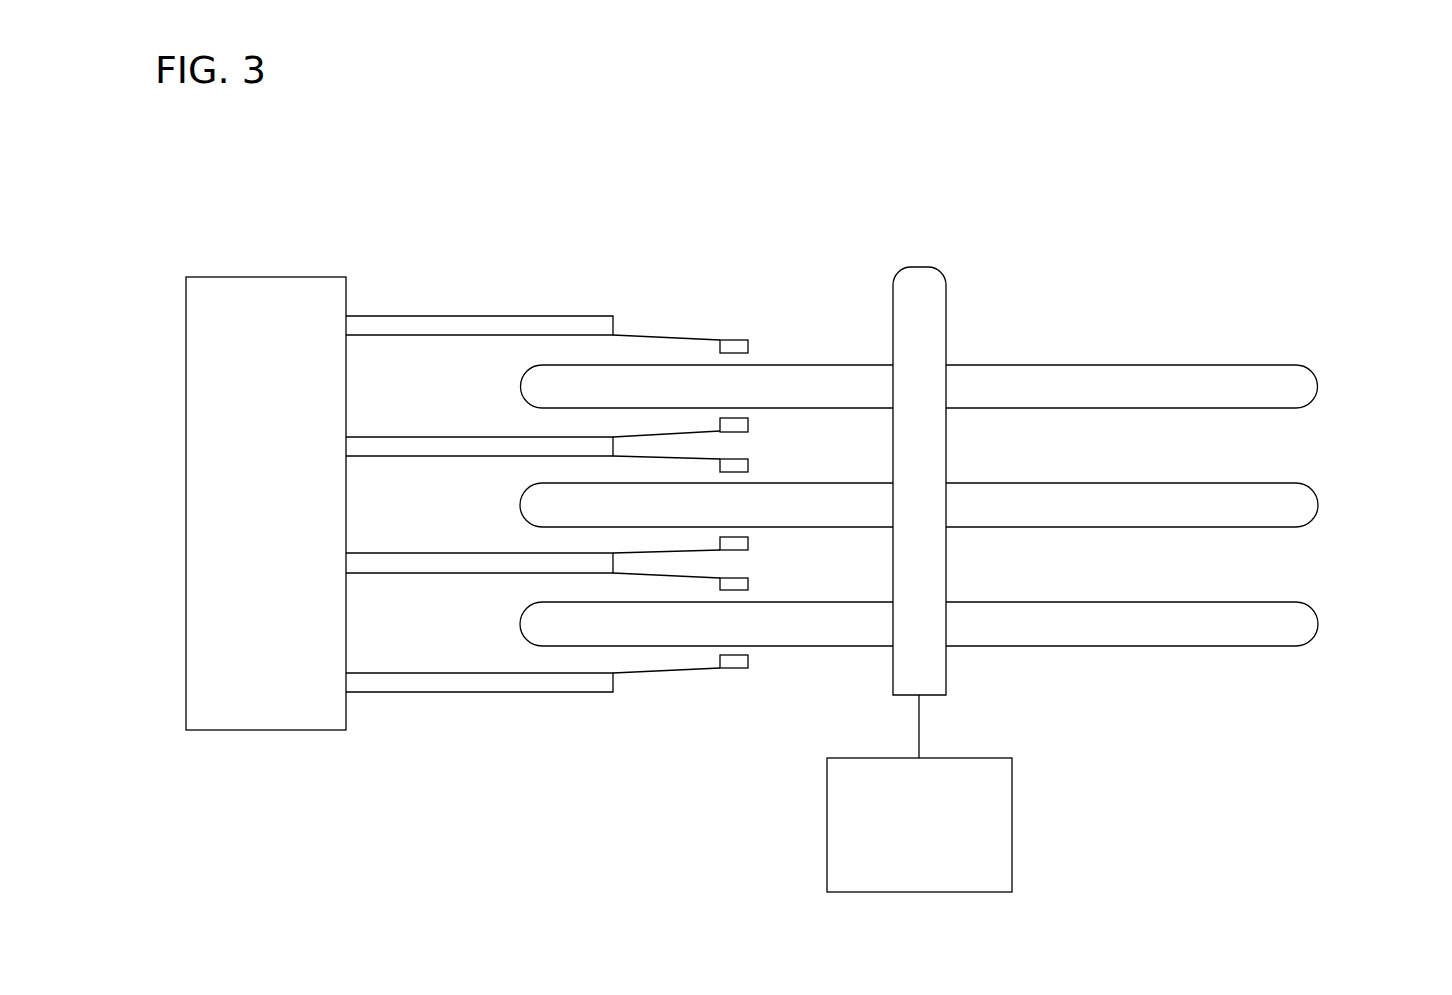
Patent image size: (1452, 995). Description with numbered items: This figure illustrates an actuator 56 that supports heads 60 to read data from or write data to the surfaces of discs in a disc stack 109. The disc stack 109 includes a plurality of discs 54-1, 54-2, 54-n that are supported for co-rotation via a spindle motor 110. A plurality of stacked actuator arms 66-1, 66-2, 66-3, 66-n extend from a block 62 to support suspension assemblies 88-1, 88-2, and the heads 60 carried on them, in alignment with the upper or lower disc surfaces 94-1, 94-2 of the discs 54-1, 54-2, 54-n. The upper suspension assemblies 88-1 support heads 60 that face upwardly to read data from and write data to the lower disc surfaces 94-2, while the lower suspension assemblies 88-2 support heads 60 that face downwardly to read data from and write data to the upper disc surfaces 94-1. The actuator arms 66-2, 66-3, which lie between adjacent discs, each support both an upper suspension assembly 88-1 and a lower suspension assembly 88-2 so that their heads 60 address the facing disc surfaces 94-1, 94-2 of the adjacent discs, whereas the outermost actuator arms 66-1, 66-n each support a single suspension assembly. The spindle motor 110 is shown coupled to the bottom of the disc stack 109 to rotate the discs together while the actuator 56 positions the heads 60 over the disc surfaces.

The actuator 56 is at (371, 228).
The block 62 is at (258, 253).
The actuator arm 66-1 is at (425, 316).
The actuator arm 66-2 is at (425, 437).
The actuator arm 66-3 is at (425, 553).
The actuator arm 66-n is at (425, 673).
The upper suspension assembly 88-1 is at (675, 432).
The lower suspension assembly 88-2 is at (668, 338).
The head 60 is at (733, 345).
The disc 54-1 is at (1320, 383).
The disc 54-2 is at (1320, 502).
The disc 54-n is at (1320, 622).
The upper disc surface 94-1 is at (1094, 362).
The lower disc surface 94-2 is at (1138, 408).
The disc stack 109 is at (1002, 333).
The spindle motor 110 is at (1012, 805).